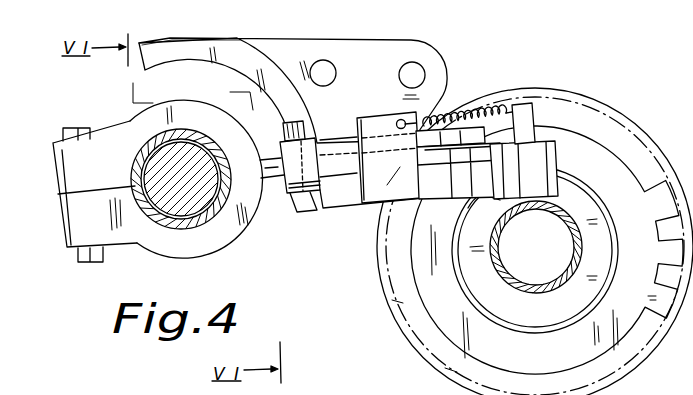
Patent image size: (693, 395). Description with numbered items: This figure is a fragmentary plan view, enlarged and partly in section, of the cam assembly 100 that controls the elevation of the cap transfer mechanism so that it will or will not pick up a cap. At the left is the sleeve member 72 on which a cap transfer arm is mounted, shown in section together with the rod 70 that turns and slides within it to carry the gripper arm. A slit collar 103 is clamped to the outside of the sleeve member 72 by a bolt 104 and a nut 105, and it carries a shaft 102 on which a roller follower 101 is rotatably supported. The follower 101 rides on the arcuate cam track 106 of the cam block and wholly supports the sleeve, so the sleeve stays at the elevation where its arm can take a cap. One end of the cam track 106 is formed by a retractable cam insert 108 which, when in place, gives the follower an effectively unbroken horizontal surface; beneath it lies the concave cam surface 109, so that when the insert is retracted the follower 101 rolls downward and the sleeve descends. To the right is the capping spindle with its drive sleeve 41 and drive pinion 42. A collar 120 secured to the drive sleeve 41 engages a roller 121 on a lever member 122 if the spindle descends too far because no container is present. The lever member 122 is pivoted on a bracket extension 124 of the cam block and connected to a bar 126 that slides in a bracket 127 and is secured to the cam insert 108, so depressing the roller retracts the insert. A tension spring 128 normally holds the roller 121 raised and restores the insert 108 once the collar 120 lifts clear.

The drive sleeve 41 is at (496, 285).
The drive pinion 42 is at (657, 257).
The rod 70 is at (160, 175).
The sleeve member 72 is at (143, 147).
The cam assembly 100 is at (280, 224).
The follower 101 is at (303, 204).
The shaft 102 is at (293, 195).
The slit collar 103 is at (66, 217).
The bolt 104 is at (72, 128).
The nut 105 is at (78, 253).
The cam track 106 is at (224, 63).
The cam insert 108 is at (283, 131).
The cam surface 109 is at (290, 208).
The collar 120 is at (555, 313).
The roller 121 is at (560, 166).
The lever member 122 is at (586, 100).
The bracket extension 124 is at (350, 209).
The bar 126 is at (338, 150).
The bracket 127 is at (381, 118).
The tension spring 128 is at (440, 114).